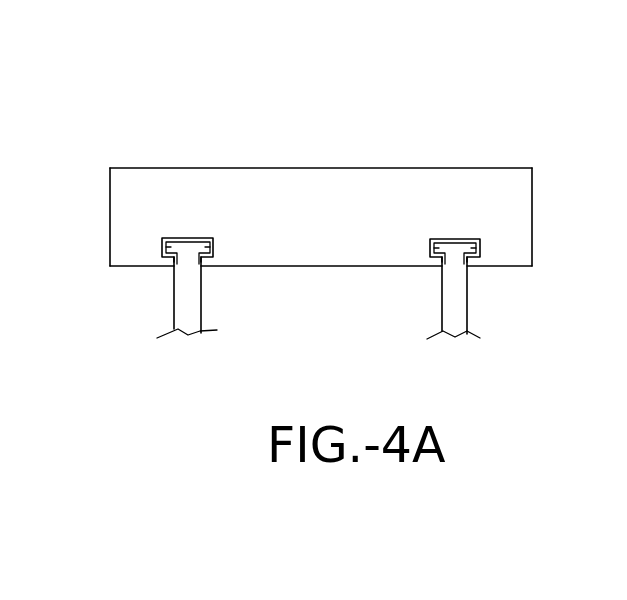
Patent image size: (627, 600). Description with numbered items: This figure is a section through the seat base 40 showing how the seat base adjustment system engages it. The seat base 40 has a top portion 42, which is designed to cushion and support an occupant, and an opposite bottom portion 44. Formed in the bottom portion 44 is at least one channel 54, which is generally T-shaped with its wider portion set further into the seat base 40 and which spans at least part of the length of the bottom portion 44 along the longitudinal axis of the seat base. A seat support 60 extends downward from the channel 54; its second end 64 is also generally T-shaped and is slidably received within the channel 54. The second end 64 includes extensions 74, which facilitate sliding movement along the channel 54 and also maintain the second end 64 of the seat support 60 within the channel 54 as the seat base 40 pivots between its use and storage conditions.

The seat base 40 is at (321, 159).
The top portion 42 is at (323, 167).
The bottom portion 44 is at (287, 267).
The channel 54 is at (193, 237).
The seat support 60 is at (166, 306).
The second end 64 is at (208, 275).
The extensions 74 is at (162, 240).